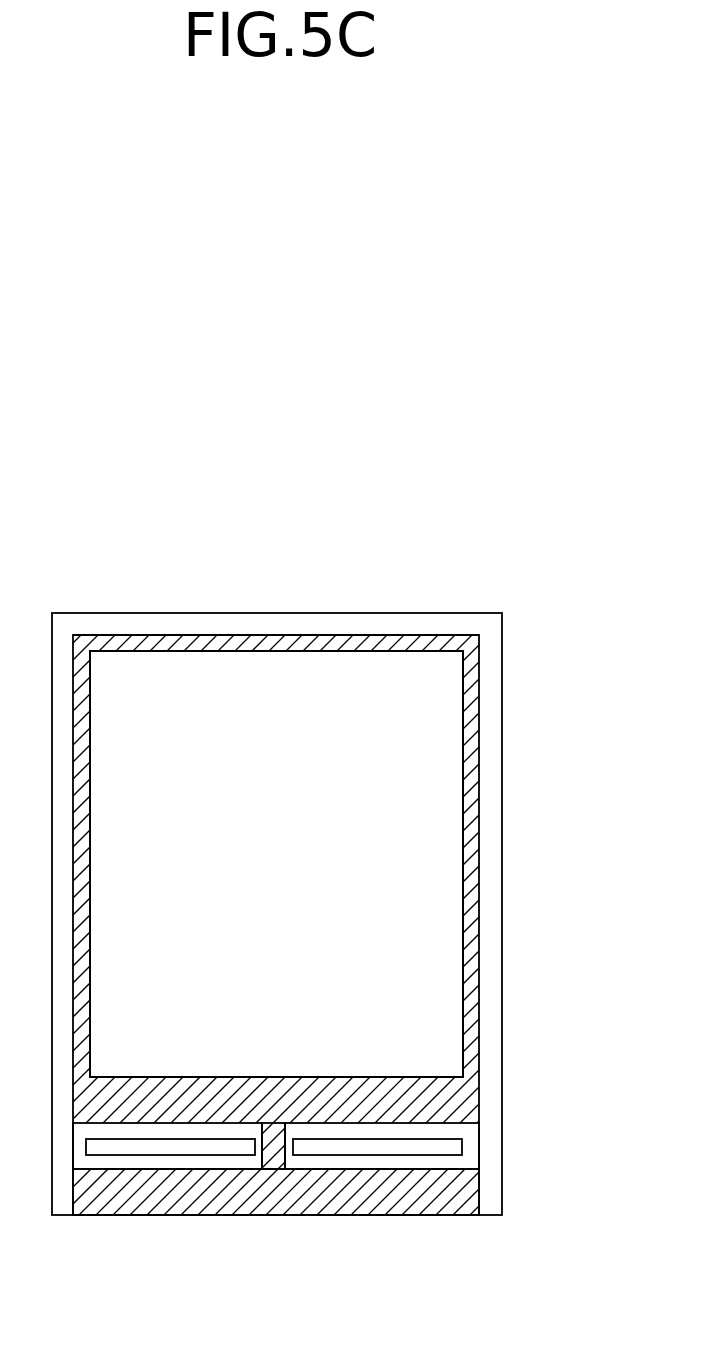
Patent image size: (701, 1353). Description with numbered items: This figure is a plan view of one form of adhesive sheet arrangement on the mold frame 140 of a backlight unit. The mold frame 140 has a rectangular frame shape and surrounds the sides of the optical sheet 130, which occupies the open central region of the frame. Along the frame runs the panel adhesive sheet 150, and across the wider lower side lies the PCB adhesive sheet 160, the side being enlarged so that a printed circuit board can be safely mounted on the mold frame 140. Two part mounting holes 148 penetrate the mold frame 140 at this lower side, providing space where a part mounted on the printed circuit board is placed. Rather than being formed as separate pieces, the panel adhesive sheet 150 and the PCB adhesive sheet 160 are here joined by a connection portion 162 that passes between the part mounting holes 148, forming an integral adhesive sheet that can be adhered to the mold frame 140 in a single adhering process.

The optical sheet 130 is at (275, 665).
The mold frame 140 is at (490, 812).
The panel adhesive sheet 150 is at (472, 960).
The part mounting hole 148 is at (459, 1145).
The PCB adhesive sheet 160 is at (170, 1207).
The connection portion 162 is at (276, 1153).